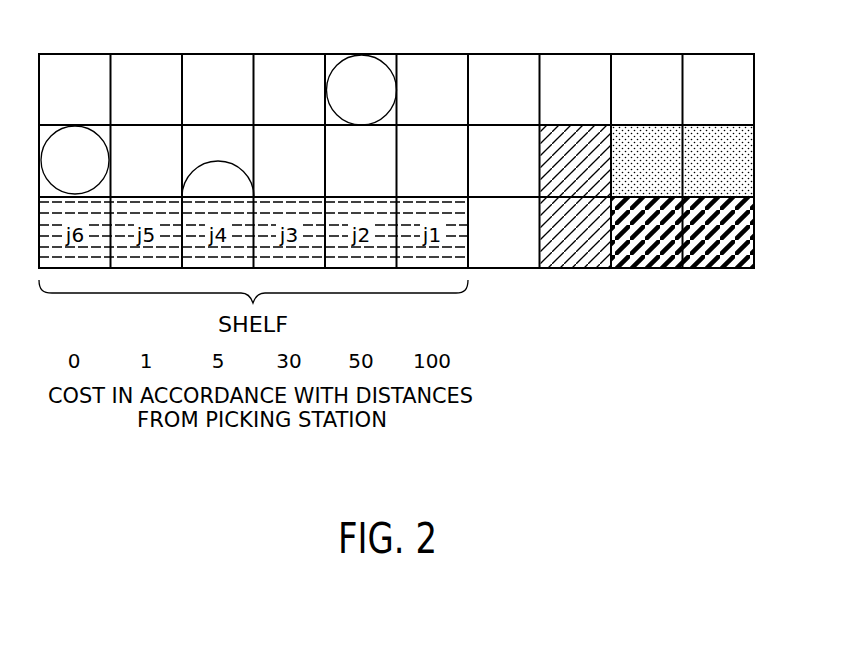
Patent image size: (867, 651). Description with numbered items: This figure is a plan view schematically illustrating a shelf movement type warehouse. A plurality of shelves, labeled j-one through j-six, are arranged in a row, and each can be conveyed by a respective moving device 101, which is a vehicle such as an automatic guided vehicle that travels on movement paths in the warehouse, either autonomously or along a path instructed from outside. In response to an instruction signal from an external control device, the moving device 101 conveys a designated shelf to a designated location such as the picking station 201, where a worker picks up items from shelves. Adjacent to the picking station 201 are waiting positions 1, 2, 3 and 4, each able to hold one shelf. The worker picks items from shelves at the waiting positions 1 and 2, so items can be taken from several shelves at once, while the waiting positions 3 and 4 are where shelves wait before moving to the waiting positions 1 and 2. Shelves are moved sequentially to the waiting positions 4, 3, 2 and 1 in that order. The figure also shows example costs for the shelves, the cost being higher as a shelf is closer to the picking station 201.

The moving device 101 is at (71, 133).
The picking station 201 is at (647, 269).
The waiting position 1 is at (719, 161).
The waiting position 2 is at (647, 161).
The waiting position 3 is at (576, 161).
The waiting position 4 is at (576, 232).